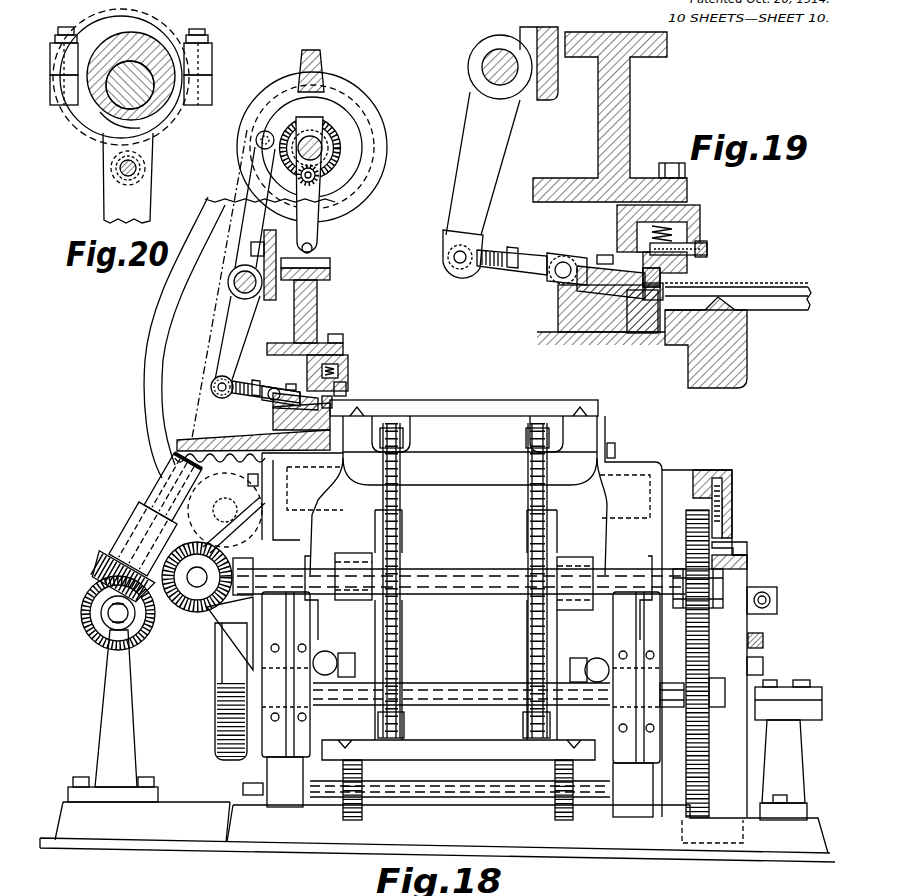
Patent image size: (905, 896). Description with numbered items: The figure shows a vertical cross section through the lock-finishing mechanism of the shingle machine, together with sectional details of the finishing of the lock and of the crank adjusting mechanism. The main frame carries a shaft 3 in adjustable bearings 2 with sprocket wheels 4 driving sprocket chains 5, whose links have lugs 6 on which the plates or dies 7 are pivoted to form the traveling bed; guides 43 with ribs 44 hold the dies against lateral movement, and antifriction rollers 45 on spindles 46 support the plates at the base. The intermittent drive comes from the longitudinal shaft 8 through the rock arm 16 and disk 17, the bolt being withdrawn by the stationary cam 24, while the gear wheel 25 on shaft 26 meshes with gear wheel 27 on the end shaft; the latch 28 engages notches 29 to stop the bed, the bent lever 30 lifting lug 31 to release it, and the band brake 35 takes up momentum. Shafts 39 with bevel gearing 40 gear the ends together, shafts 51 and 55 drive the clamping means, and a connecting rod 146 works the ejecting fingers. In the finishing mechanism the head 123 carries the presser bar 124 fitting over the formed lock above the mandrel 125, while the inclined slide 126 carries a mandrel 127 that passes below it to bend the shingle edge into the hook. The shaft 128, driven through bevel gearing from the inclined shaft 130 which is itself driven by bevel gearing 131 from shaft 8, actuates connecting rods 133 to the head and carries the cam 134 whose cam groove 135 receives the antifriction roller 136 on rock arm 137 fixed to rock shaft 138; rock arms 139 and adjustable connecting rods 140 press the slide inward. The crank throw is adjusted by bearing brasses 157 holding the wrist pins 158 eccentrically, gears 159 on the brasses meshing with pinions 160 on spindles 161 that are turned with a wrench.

In FIG. 18, the adjustable bearings 2 is at (313, 583).
In FIG. 18, the shaft 3 is at (452, 574).
In FIG. 18, the sprocket wheels 4 is at (533, 611).
In FIG. 18, the sprocket chains 5 is at (400, 604).
In FIG. 18, the lugs 6 is at (400, 720).
In FIG. 19, the plates or dies 7 is at (805, 312).
In FIG. 18, the plates or dies 7 is at (472, 751).
In FIG. 18, the longitudinal shaft 8 is at (95, 633).
In FIG. 18, the rock arm 16 is at (778, 606).
In FIG. 18, the disk 17 is at (733, 766).
In FIG. 18, the stationary cam 24 is at (765, 666).
In FIG. 18, the gear wheel 25 is at (703, 721).
In FIG. 18, the shaft 26 is at (450, 685).
In FIG. 18, the gear wheel 27 is at (707, 584).
In FIG. 18, the latch 28 is at (717, 550).
In FIG. 18, the notches 29 is at (700, 551).
In FIG. 18, the bent lever 30 is at (747, 554).
In FIG. 18, the lug 31 is at (720, 547).
In FIG. 18, the band brake 35 is at (215, 711).
In FIG. 18, the shafts 39 is at (196, 581).
In FIG. 18, the bevel gearing 40 is at (222, 606).
In FIG. 19, the guides 43 is at (748, 362).
In FIG. 18, the guides 43 is at (608, 429).
In FIG. 19, the ribs 44 is at (750, 312).
In FIG. 18, the ribs 44 is at (600, 408).
In FIG. 18, the antifriction rollers 45 is at (350, 763).
In FIG. 18, the spindles 46 is at (497, 772).
In FIG. 18, the longitudinal shaft 51 is at (325, 666).
In FIG. 18, the longitudinal shaft 55 is at (598, 674).
In FIG. 19, the head 123 is at (632, 89).
In FIG. 18, the head 123 is at (318, 303).
In FIG. 19, the presser bar 124 is at (688, 272).
In FIG. 18, the presser bar 124 is at (349, 373).
In FIG. 19, the mandrel 125 is at (640, 272).
In FIG. 18, the mandrel 125 is at (332, 399).
In FIG. 19, the slide 126 is at (570, 308).
In FIG. 18, the slide 126 is at (273, 407).
In FIG. 19, the mandrel 127 is at (640, 293).
In FIG. 18, the mandrel 127 is at (313, 440).
In FIG. 20, the shaft 128 is at (152, 122).
In FIG. 18, the inclined shaft 130 is at (168, 476).
In FIG. 18, the bevel gearing 131 is at (103, 567).
In FIG. 20, the connecting rods 133 is at (148, 199).
In FIG. 18, the connecting rods 133 is at (184, 337).
In FIG. 18, the cam 134 is at (385, 116).
In FIG. 18, the cam groove 135 is at (362, 138).
In FIG. 18, the antifriction roller 136 is at (256, 137).
In FIG. 18, the rock arm 137 is at (315, 212).
In FIG. 19, the rock shaft 138 is at (480, 67).
In FIG. 18, the rock shaft 138 is at (228, 288).
In FIG. 19, the rock arms 139 is at (469, 184).
In FIG. 18, the rock arms 139 is at (228, 346).
In FIG. 19, the connecting rods 140 is at (485, 268).
In FIG. 18, the connecting rods 140 is at (248, 393).
In FIG. 18, the connecting rod 146 is at (765, 641).
In FIG. 20, the bearing brasses 157 is at (195, 66).
In FIG. 20, the wrist pins 158 is at (102, 112).
In FIG. 20, the gears 159 is at (190, 113).
In FIG. 18, the gears 159 is at (337, 150).
In FIG. 20, the pinions 160 is at (115, 182).
In FIG. 18, the pinions 160 is at (318, 181).
In FIG. 20, the spindles 161 is at (140, 170).